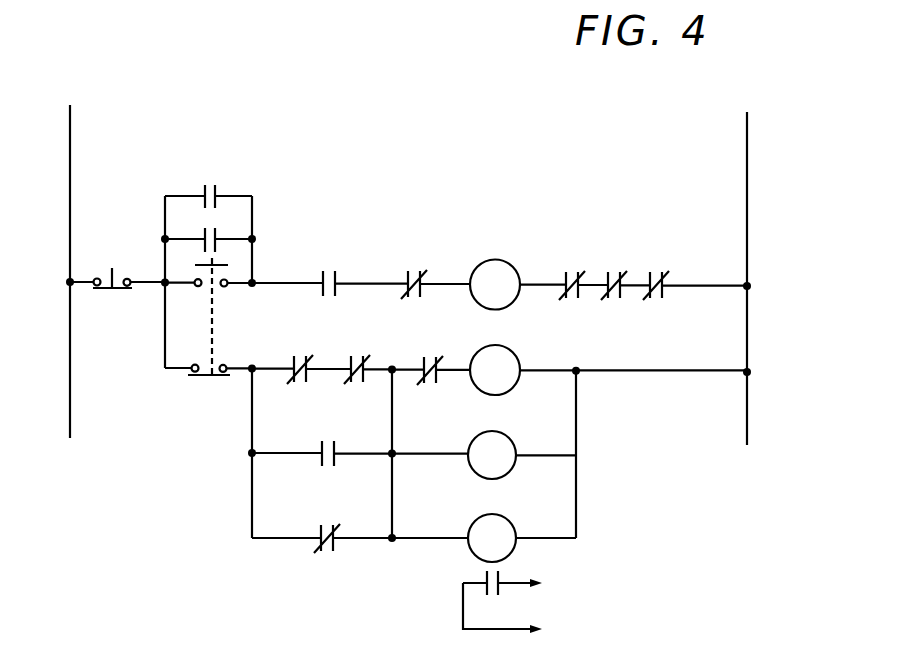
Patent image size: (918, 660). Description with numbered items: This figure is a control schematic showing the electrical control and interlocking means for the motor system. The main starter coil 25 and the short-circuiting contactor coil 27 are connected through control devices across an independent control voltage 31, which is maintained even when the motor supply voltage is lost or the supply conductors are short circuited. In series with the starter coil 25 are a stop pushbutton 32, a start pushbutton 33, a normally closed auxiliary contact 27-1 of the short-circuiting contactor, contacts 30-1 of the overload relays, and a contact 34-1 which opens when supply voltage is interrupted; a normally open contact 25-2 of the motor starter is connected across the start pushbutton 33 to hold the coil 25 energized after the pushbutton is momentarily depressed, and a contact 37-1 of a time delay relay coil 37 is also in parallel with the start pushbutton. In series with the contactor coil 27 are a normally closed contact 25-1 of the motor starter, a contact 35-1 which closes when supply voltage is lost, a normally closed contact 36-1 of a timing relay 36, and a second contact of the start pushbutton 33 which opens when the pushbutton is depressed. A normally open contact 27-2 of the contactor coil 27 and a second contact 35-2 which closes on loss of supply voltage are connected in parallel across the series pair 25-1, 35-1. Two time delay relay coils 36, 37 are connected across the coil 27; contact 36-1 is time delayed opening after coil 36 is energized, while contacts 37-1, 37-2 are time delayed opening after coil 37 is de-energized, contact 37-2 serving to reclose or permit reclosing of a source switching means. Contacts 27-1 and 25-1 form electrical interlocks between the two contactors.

The independent control voltage 31 is at (747, 134).
The stop pushbutton 32 is at (112, 265).
The contact of time delay relay coil 37-1 is at (208, 183).
The normally open contact of the motor starter 25-2 is at (220, 230).
The start pushbutton 33 is at (214, 322).
The contact which opens when supply voltage is interrupted 34-1 is at (330, 270).
The normally closed auxiliary contact of the short-circuiting contactor 27-1 is at (410, 271).
The main starter coil 25 is at (486, 261).
The contacts of overload relays 30-1 is at (614, 265).
The contact which closes when supply voltage is lost 35-1 is at (304, 356).
The normally closed contact of the motor starter 25-1 is at (362, 381).
The normally closed contact of timing relay 36-1 is at (425, 358).
The short-circuiting contactor coil 27 is at (513, 352).
The normally open contact of the short-circuiting contactor coil 27-2 is at (325, 440).
The time delay relay coil 36 is at (509, 438).
The second contact which closes when supply voltage is lost 35-2 is at (324, 526).
The time delay relay coil 37 is at (509, 521).
The contact of time delay relay coil 37-2 is at (618, 608).